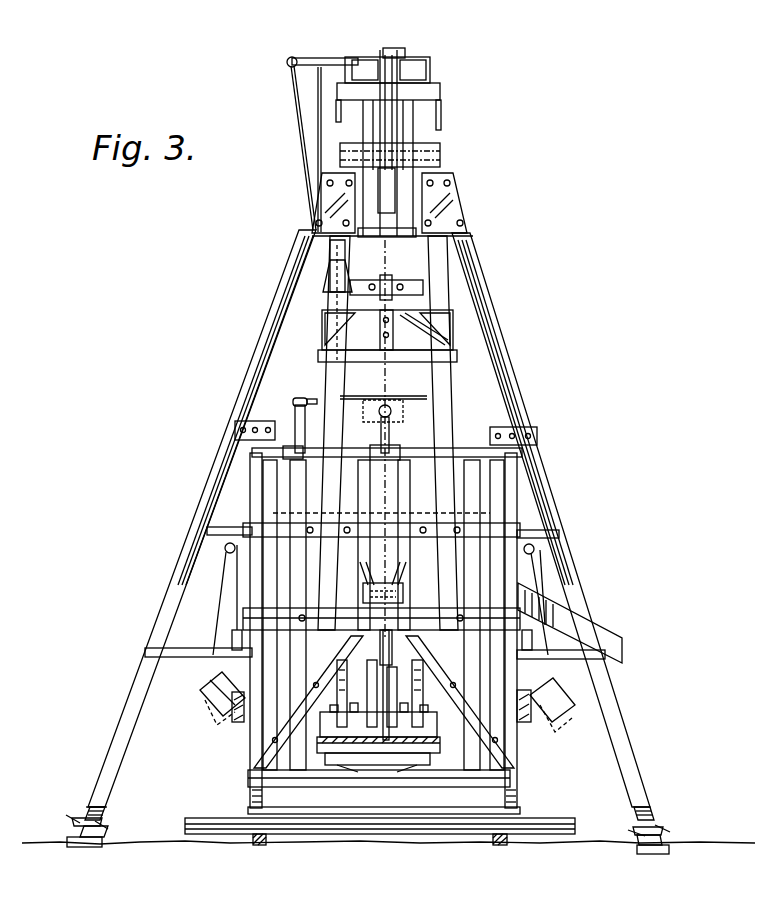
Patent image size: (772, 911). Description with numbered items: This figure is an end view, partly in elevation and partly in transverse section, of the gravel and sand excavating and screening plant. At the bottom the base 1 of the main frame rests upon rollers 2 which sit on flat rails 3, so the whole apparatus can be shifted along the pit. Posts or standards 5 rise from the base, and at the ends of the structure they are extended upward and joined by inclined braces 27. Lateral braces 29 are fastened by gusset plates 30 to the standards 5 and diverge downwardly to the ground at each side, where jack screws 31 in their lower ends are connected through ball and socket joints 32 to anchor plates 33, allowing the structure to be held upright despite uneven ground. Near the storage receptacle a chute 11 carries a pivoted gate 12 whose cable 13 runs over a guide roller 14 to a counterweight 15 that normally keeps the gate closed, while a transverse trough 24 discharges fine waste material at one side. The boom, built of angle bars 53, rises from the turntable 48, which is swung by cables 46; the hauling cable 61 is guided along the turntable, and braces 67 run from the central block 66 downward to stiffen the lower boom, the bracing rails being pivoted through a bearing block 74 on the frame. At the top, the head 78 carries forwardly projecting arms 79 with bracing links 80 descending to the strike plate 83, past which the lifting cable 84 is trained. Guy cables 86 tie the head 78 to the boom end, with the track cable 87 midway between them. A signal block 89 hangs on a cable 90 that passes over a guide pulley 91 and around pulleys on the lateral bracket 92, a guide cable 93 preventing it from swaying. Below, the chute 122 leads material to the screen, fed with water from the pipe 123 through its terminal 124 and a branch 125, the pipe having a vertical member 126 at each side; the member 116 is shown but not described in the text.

The base 1 is at (514, 783).
The rollers 2 is at (434, 835).
The flat rails 3 is at (501, 847).
The posts or standards 5 is at (440, 265).
The chutes 11 is at (209, 715).
The gate or cut-off 12 is at (204, 692).
The cable 13 is at (222, 610).
The guide roller 14 is at (233, 528).
The counterweight 15 is at (232, 640).
The trough or chute 24 is at (603, 637).
The inclined braces 27 is at (440, 152).
The lateral braces 29 is at (512, 378).
The gusset plates 30 is at (455, 197).
The jack screws 31 is at (100, 808).
The universal joints or ball and socket joints 32 is at (70, 822).
The anchor plates 33 is at (85, 847).
The cables 46 is at (346, 745).
The turntable 48 is at (373, 766).
The angle bars 53 is at (338, 663).
The hauling or pulling cable 61 is at (387, 683).
The central block 66 is at (393, 568).
The braces 67 is at (377, 668).
The bearing block 74 is at (392, 620).
The head 78 is at (441, 90).
The forwardly projecting arms 79 is at (362, 70).
The bracing links 80 is at (380, 124).
The strike plate or trip 83 is at (395, 198).
The lifting cable 84 is at (385, 271).
The guy cables 86 is at (336, 101).
The track cable 87 is at (442, 114).
The signal block 89 is at (315, 283).
The cable 90 is at (394, 54).
The guide pulley 91 is at (406, 56).
The laterally extending bracket 92 is at (335, 57).
The guide cable 93 is at (317, 170).
The cross box beam 116 is at (408, 334).
The chute or trough 122 is at (397, 412).
The water pipe 123 is at (457, 447).
The terminal 124 is at (390, 437).
The branch 125 is at (296, 416).
The vertical members 126 is at (240, 737).